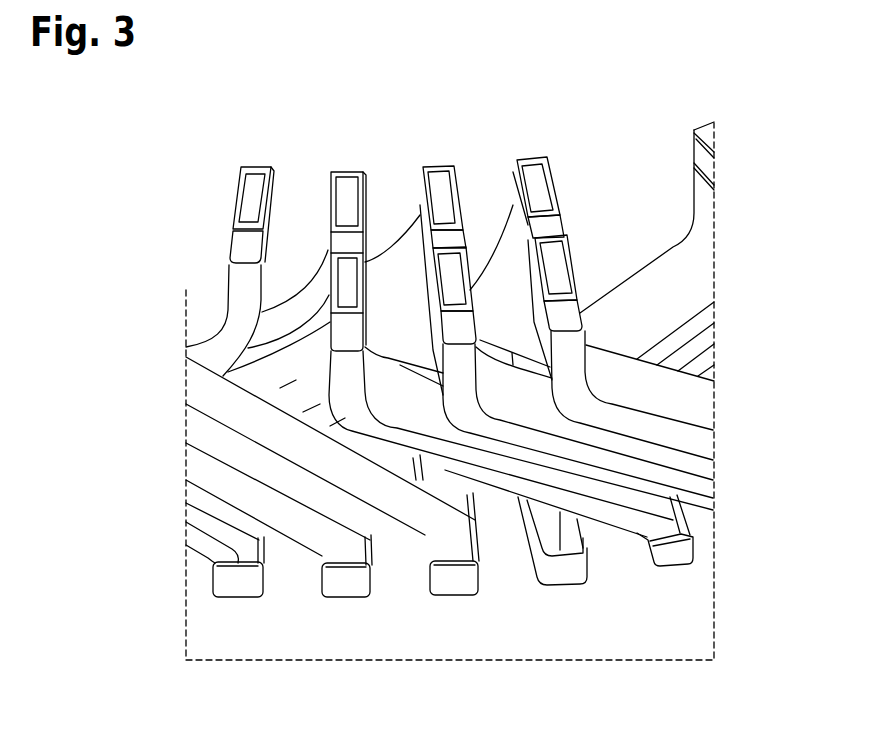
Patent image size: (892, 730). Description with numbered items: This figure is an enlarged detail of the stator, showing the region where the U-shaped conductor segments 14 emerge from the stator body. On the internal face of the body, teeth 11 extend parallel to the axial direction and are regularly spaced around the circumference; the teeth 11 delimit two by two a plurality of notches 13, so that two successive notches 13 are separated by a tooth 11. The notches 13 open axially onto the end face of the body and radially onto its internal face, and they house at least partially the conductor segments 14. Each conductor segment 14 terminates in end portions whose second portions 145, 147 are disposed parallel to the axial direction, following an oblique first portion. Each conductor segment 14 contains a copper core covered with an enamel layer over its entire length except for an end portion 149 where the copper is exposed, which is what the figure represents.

The teeth 11 is at (505, 565).
The notches 13 is at (700, 503).
The conductor segments 14 is at (705, 406).
The second portion 145 is at (597, 348).
The second portion 147 is at (222, 296).
The end portion 149 is at (240, 195).